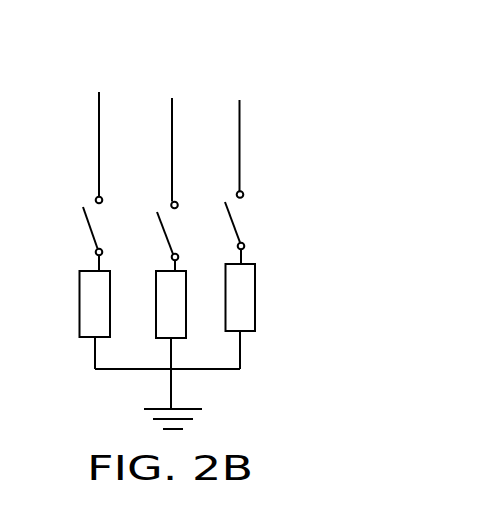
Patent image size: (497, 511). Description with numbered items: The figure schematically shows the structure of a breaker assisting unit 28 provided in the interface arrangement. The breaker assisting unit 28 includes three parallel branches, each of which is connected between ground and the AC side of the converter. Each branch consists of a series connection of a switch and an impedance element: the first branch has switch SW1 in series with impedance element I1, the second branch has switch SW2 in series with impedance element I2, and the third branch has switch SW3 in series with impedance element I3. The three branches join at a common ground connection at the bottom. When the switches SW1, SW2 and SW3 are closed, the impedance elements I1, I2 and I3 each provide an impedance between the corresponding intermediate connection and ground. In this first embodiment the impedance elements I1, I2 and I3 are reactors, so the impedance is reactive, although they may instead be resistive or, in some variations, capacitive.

The breaker assisting unit 28 is at (272, 179).
The switch SW1 is at (61, 181).
The switch SW2 is at (140, 184).
The switch SW3 is at (209, 182).
The impedance element I1 is at (76, 320).
The impedance element I2 is at (151, 340).
The impedance element I3 is at (223, 316).